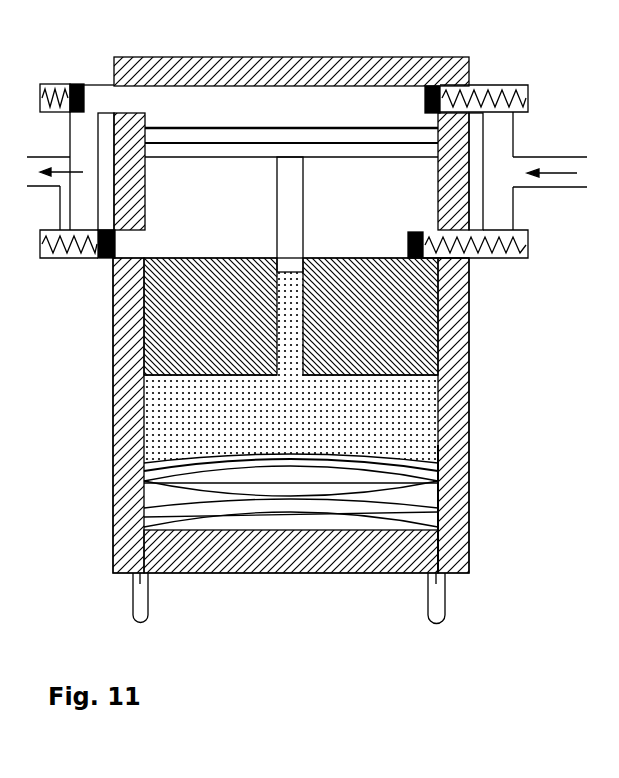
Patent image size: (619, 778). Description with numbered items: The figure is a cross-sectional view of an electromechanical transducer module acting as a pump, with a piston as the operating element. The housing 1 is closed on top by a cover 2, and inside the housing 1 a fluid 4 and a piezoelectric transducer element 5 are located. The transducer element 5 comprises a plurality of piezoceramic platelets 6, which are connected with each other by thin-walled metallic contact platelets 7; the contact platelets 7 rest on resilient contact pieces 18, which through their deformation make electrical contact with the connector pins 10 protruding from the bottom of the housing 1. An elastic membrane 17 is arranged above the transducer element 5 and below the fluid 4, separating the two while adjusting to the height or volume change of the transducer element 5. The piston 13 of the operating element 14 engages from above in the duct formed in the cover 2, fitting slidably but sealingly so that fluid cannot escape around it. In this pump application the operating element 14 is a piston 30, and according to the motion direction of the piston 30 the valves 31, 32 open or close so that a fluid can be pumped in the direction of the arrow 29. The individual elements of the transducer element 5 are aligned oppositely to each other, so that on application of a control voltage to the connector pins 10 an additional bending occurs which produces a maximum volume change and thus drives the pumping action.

The housing 1 is at (120, 338).
The cover 2 is at (175, 317).
The fluid 4 is at (415, 407).
The piezoelectric transducer element 5 is at (430, 502).
The piezoceramic platelets 6 is at (413, 488).
The contact platelets 7 is at (143, 483).
The connector pins 10 is at (142, 607).
The piston 13 is at (290, 212).
The operating element 14 is at (291, 89).
The membrane 17 is at (397, 456).
The contact pieces 18 is at (145, 527).
The arrow 29 is at (65, 173).
The piston 30 is at (267, 137).
The valve 31 is at (98, 243).
The valve 32 is at (58, 84).